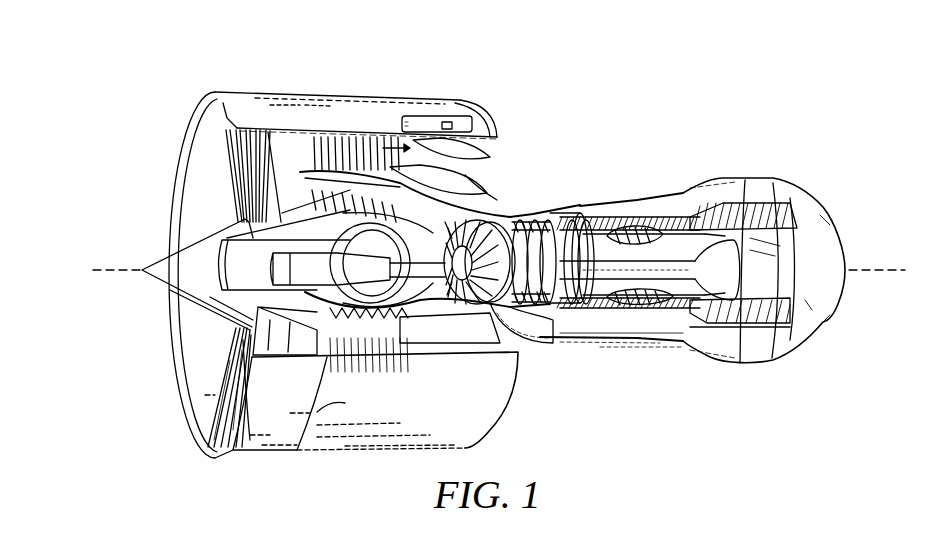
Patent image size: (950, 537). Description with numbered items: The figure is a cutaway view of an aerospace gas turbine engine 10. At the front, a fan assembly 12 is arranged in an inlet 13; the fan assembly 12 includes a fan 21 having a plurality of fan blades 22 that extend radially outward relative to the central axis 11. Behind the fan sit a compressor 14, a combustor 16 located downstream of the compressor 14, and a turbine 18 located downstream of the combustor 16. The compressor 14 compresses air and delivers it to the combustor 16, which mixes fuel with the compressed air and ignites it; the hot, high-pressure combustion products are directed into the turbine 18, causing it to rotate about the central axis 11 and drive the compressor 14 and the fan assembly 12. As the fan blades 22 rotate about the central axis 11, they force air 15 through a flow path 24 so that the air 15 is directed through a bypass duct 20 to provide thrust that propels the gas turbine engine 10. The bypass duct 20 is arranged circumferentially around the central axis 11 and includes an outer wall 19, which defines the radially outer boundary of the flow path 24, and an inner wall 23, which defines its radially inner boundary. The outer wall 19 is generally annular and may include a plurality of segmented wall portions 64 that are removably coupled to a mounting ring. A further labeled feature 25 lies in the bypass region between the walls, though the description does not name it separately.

The gas turbine engine 10 is at (749, 80).
The central axis 11 is at (111, 265).
The fan assembly 12 is at (182, 168).
The inlet 13 is at (155, 212).
The compressor 14 is at (510, 208).
The air 15 is at (309, 137).
The combustor 16 is at (612, 190).
The turbine 18 is at (758, 175).
The outer wall 19 is at (386, 108).
The bypass duct 20 is at (370, 116).
The fan 21 is at (219, 125).
The fan blades 22 is at (286, 170).
The inner wall 23 is at (465, 175).
The flow path 24 is at (453, 126).
The bypass flow passage 25 is at (469, 138).
The segmented wall portions 64 is at (416, 128).